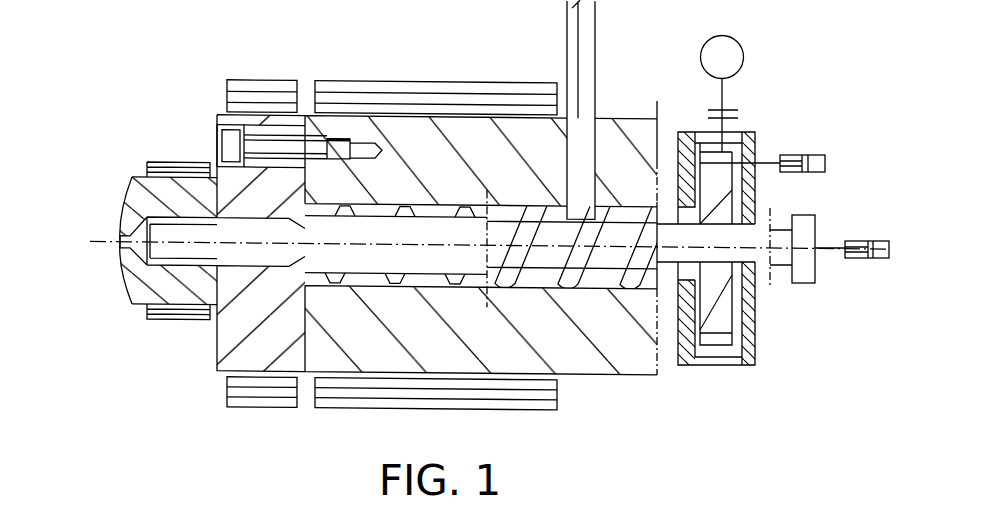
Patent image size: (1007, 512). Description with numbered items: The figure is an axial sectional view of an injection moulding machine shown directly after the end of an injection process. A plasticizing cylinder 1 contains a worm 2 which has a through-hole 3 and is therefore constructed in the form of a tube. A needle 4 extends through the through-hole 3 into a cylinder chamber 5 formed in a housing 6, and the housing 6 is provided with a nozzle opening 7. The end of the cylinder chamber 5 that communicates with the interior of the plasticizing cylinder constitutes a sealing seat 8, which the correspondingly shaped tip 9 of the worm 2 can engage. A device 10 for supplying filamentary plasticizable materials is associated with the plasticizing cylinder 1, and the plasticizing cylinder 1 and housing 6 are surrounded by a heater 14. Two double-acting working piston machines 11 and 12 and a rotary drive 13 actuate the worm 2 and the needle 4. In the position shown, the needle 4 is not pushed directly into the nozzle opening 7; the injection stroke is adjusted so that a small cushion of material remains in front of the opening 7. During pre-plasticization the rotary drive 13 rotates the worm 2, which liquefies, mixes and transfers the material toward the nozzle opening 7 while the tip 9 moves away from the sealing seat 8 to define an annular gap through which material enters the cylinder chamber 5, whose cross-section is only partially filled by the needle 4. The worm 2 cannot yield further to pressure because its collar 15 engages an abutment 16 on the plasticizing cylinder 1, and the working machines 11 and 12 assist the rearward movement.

The plasticizing cylinder 1 is at (600, 354).
The worm 2 is at (352, 271).
The through-hole 3 is at (413, 271).
The needle 4 is at (443, 233).
The cylinder chamber 5 is at (126, 270).
The housing 6 is at (147, 195).
The nozzle opening 7 is at (122, 242).
The sealing seat 8 is at (282, 195).
The tip 9 is at (296, 300).
The device for supplying filamentary plasticizable materials 10 is at (602, 120).
The double-acting working piston machine 11 is at (817, 153).
The double-acting working piston machine 12 is at (882, 260).
The rotary drive 13 is at (745, 50).
The heater 14 is at (180, 110).
The collar 15 is at (713, 322).
The abutment 16 is at (740, 327).